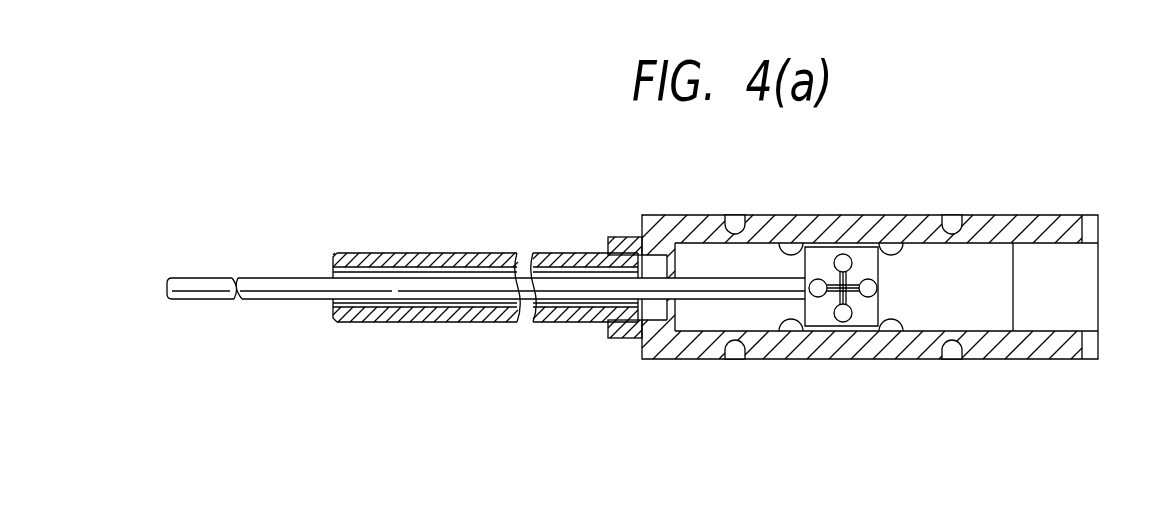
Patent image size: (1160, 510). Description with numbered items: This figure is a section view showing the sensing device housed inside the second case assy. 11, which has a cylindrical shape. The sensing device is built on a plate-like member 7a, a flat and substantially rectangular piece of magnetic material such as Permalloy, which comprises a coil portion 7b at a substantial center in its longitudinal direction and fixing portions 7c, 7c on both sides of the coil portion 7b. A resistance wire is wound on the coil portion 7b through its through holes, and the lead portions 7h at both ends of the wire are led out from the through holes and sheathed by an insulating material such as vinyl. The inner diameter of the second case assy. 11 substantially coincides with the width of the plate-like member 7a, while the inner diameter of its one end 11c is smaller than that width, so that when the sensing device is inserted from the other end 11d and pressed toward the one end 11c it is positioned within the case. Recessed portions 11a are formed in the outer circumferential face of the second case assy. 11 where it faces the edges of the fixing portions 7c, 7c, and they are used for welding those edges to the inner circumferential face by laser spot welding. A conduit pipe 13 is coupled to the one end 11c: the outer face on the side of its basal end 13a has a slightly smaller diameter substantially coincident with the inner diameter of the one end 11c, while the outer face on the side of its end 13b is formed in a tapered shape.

The second case assy. 11 is at (826, 203).
The recessed portions 11a is at (737, 214).
The one end 11c is at (612, 242).
The other end 11d is at (1100, 222).
The conduit pipe 13 is at (450, 325).
The basal end 13a is at (625, 340).
The end 13b is at (337, 325).
The lead portions 7h is at (267, 277).
The coil portion 7b is at (866, 318).
The fixing portions 7c is at (689, 247).
The plate-like member 7a is at (1013, 306).